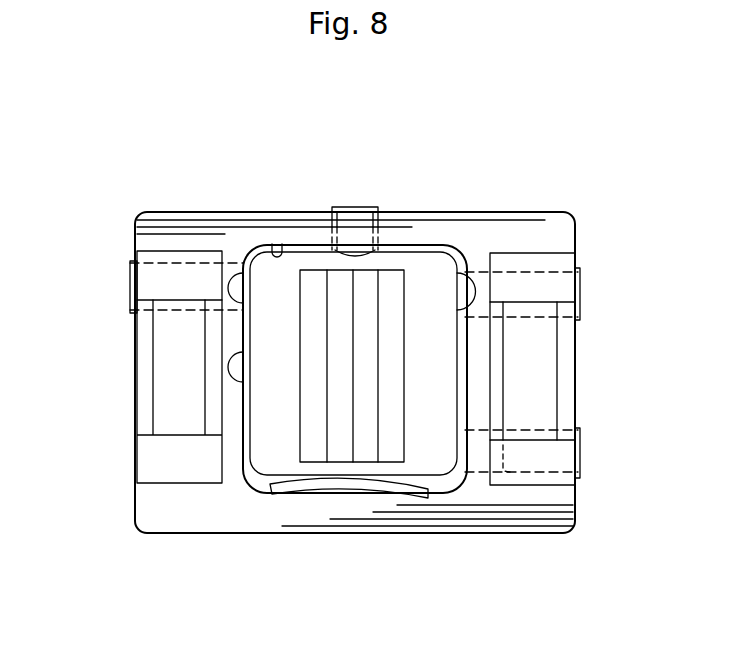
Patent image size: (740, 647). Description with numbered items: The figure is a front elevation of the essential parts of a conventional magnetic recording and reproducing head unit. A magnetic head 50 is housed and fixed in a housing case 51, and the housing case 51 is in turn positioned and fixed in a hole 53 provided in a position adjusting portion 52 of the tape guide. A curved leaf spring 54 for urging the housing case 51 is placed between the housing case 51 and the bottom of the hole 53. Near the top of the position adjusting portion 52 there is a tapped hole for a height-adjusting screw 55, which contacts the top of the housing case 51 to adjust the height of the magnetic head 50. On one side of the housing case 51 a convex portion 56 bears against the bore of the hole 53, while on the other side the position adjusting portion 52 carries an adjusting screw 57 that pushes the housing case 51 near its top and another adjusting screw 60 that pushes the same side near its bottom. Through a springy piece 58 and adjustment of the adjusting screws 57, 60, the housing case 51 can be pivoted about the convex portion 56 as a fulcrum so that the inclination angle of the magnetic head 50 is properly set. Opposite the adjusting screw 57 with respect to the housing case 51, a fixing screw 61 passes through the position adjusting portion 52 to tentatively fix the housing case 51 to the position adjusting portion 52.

The magnetic head 50 is at (387, 452).
The housing case 51 is at (272, 455).
The position adjusting portion 52 is at (458, 232).
The hole 53 is at (276, 243).
The curved leaf spring 54 is at (280, 496).
The height-adjusting screw 55 is at (355, 207).
The convex portion 56 is at (243, 368).
The adjusting screw 57 is at (580, 297).
The springy piece 58 is at (505, 432).
The adjusting screw 60 is at (580, 455).
The fixing screw 61 is at (130, 283).